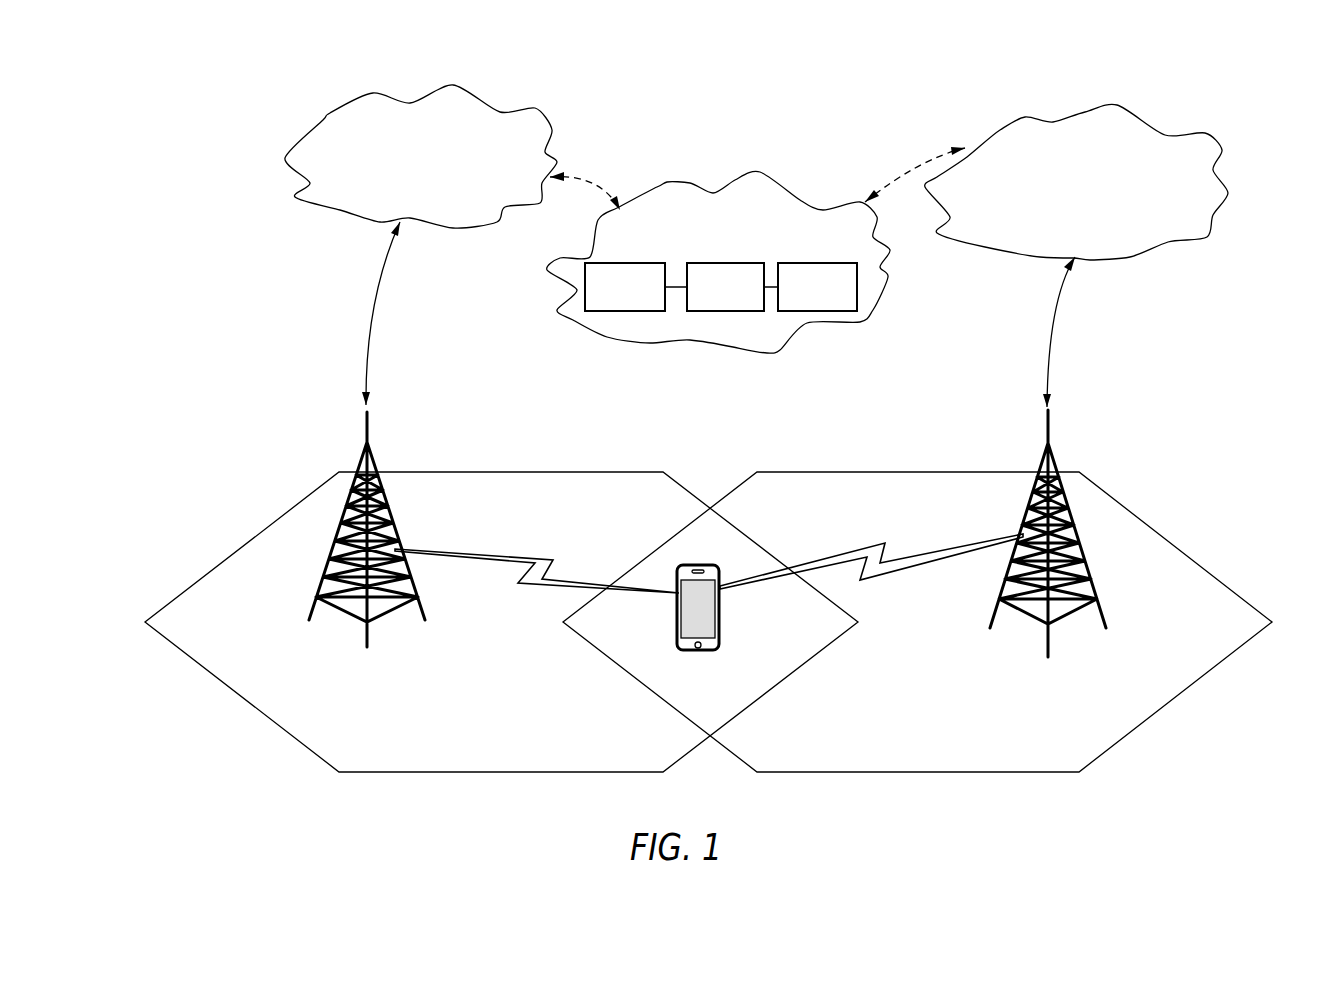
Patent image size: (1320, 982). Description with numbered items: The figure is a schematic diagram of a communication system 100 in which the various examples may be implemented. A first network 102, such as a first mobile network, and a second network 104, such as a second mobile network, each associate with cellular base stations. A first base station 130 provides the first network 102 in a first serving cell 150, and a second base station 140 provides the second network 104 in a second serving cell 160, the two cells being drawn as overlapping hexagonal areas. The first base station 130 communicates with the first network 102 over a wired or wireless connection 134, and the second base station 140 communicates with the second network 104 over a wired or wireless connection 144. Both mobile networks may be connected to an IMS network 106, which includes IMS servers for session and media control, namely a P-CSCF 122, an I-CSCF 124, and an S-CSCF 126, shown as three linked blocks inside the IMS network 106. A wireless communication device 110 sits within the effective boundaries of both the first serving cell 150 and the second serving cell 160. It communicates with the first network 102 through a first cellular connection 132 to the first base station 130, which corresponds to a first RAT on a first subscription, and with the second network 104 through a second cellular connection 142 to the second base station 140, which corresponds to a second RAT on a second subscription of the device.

The communication system 100 is at (744, 72).
The first network 102 is at (345, 111).
The second network 104 is at (1053, 120).
The IMS network 106 is at (760, 172).
The wireless communication device 110 is at (720, 598).
The Proxy Call Session Control Function (P-CSCF) 122 is at (612, 262).
The Interrogating CSCF (I-CSCF) 124 is at (717, 310).
The Serving CSCF (S-CSCF) 126 is at (797, 262).
The first base station 130 is at (323, 580).
The first cellular connection 132 is at (553, 587).
The wired or wireless connection 134 is at (372, 300).
The second base station 140 is at (1090, 580).
The second cellular connection 142 is at (868, 543).
The wired or wireless connection 144 is at (1050, 320).
The first serving cell 150 is at (555, 471).
The second serving cell 160 is at (887, 472).